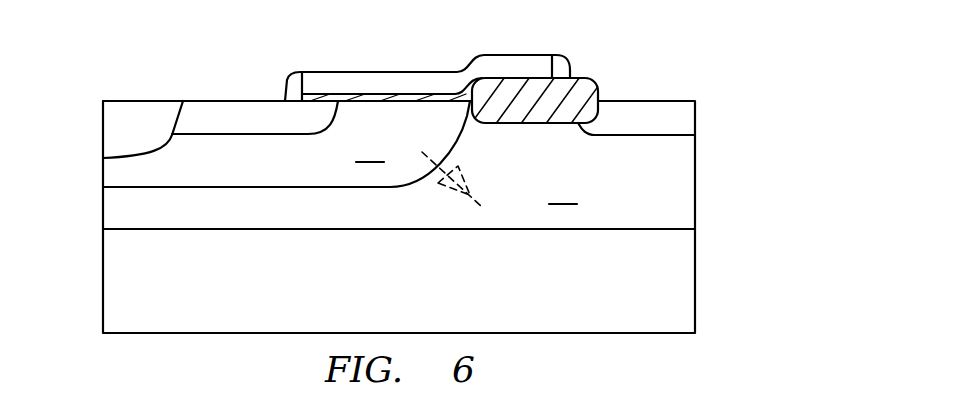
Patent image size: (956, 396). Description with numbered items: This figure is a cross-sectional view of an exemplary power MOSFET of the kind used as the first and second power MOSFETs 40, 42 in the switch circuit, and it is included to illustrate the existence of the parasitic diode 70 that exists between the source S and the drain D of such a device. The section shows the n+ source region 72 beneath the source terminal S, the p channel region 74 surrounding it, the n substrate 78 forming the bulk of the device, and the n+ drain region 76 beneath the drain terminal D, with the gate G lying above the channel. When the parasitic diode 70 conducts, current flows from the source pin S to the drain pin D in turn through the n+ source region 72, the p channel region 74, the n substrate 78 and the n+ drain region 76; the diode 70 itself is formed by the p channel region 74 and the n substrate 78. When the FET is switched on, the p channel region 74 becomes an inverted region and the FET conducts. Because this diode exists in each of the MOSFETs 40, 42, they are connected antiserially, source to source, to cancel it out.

The first power MOSFET 40 is at (462, 177).
The second power MOSFET 42 is at (462, 177).
The parasitic diode 70 is at (462, 176).
The n+ source region 72 is at (262, 101).
The p channel region 74 is at (286, 144).
The n+ drain region 76 is at (697, 120).
The n substrate 78 is at (399, 217).